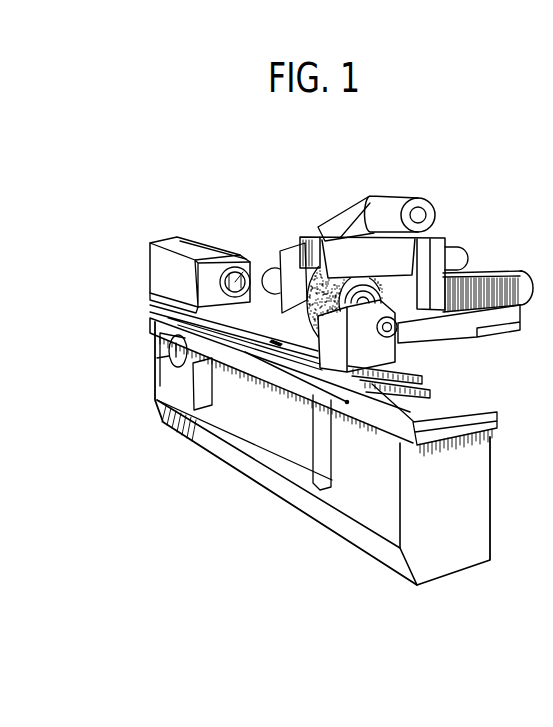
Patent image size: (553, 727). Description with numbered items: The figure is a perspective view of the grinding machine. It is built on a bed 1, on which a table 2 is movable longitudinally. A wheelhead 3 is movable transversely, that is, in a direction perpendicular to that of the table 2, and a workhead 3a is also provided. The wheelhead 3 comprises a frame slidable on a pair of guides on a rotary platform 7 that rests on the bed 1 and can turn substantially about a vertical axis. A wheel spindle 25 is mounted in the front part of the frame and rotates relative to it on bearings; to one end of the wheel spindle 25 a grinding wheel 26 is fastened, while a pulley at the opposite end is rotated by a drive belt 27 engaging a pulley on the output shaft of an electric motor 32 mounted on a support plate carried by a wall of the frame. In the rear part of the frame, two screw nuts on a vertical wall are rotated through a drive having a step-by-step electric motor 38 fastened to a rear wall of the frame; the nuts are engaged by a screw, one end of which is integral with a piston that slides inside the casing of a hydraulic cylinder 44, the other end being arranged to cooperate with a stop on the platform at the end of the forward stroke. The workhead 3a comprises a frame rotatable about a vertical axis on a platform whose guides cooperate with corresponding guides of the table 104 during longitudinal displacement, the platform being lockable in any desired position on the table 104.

The bed 1 is at (352, 501).
The table 2 is at (280, 343).
The wheelhead 3 is at (412, 286).
The workhead 3a is at (155, 272).
The rotary platform 7 is at (480, 321).
The wheel spindle 25 is at (385, 283).
The grinding wheel 26 is at (298, 288).
The drive belt 27 is at (357, 213).
The electric motor 32 is at (389, 200).
The step-by-step electric motor 38 is at (457, 247).
The hydraulic cylinder 44 is at (530, 291).
The table 104 is at (268, 317).